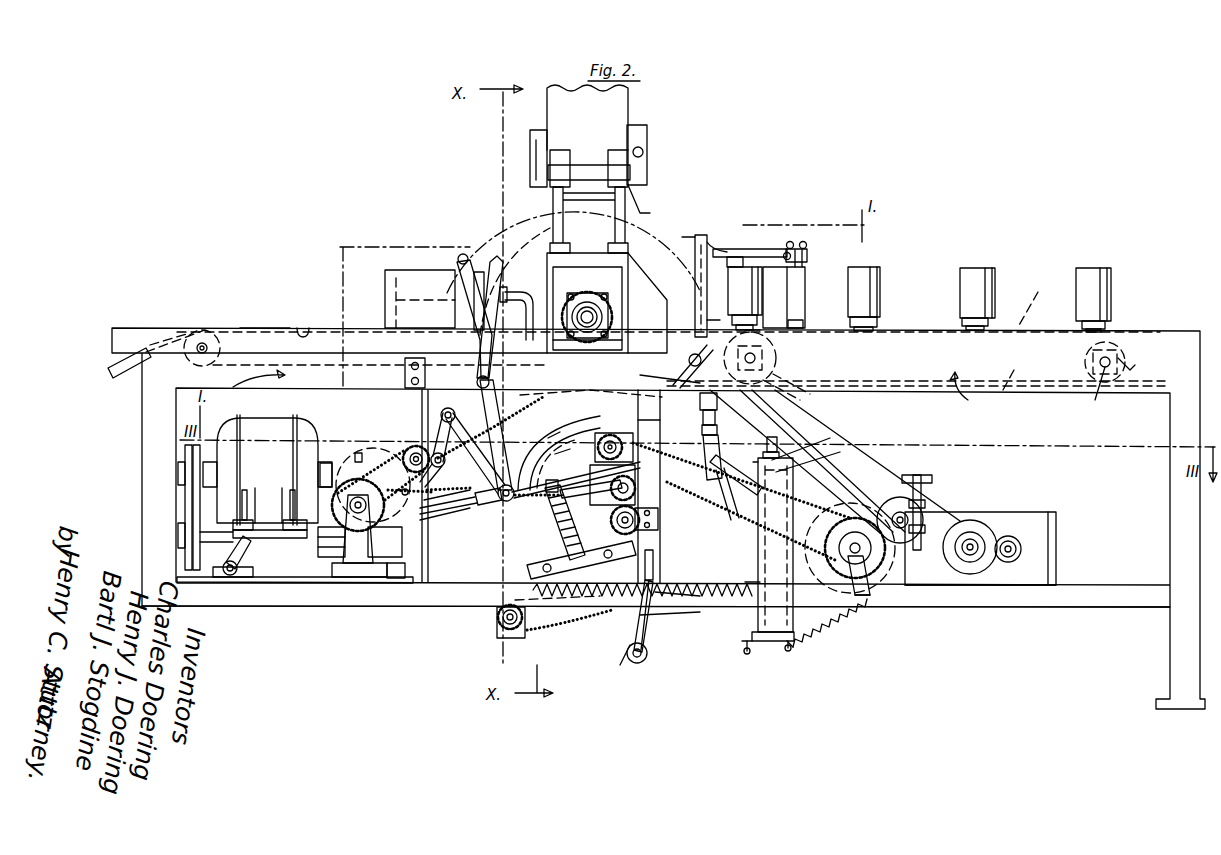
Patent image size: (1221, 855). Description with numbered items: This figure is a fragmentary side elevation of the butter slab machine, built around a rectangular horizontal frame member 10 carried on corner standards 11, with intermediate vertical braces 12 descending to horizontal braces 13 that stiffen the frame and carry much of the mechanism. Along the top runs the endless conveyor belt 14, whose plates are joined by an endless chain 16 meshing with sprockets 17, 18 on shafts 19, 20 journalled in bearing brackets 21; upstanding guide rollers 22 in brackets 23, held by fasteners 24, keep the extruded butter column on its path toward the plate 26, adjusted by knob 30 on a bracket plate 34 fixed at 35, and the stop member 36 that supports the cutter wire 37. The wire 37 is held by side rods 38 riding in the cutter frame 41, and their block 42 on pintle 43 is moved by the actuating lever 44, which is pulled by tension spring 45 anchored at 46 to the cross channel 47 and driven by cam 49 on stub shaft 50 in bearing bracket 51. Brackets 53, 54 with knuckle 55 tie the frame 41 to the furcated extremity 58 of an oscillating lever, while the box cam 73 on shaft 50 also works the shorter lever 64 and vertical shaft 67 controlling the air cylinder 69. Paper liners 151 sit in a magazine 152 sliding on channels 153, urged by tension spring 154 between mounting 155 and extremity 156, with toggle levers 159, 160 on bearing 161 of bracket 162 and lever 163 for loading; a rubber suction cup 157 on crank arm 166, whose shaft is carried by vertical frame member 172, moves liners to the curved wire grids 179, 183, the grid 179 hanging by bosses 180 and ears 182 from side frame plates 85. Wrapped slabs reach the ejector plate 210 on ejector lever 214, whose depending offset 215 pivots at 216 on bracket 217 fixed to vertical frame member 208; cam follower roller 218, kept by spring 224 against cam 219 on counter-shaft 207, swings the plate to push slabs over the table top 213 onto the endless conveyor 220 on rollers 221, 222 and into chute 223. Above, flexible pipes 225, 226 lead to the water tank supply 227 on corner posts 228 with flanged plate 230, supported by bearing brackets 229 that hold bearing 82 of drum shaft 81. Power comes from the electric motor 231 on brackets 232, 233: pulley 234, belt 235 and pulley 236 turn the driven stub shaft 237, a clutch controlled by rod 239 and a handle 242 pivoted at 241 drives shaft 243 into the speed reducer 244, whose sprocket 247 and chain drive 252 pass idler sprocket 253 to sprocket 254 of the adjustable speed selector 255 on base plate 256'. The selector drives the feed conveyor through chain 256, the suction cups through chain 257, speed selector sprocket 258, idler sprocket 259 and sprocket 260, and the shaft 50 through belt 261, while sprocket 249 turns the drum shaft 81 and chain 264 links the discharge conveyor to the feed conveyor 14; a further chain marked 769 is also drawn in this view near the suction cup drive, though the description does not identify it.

The horizontal frame member 10 is at (609, 393).
The corner standards 11 is at (160, 408).
The intermediate vertical braces 12 is at (650, 429).
The horizontal braces 13 is at (385, 607).
The endless conveyor belt 14 is at (1033, 301).
The endless chain 16 is at (1014, 372).
The sprocket 17 is at (1135, 369).
The sprocket 18 is at (780, 349).
The shaft 19 is at (1101, 390).
The shaft 20 is at (1112, 345).
The bearing brackets 21 is at (764, 322).
The vertical guide rollers 22 is at (1110, 258).
The brackets 23 is at (760, 320).
The fasteners 24 is at (870, 318).
The horizontally extending plate 26 is at (748, 249).
The manual manipulating knob 30 is at (800, 243).
The upstanding bracket plate 34 is at (790, 283).
The fixing point 35 is at (800, 322).
The angularly offset stop member 36 is at (712, 245).
The slab cutter wire 37 is at (686, 238).
The cutter side rods 38 is at (651, 303).
The cutter frame 41 is at (703, 234).
The block 42 is at (697, 400).
The pintle 43 is at (718, 320).
The actuating lever 44 is at (767, 445).
The tension spring 45 is at (830, 623).
The spring anchor 46 is at (797, 647).
The cross channel 47 is at (772, 635).
The actuating cam 49 is at (998, 595).
The stub shaft 50 is at (833, 590).
The bearing bracket 51 is at (858, 600).
The bracket 53 is at (724, 414).
The bracket 54 is at (745, 458).
The adjustable knuckle 55 is at (726, 449).
The furcated extremity 58 is at (748, 490).
The lever 64 is at (809, 454).
The vertical shaft 67 is at (801, 440).
The air cylinder 69 is at (741, 581).
The box cam 73 is at (925, 588).
The drum shaft 81 is at (603, 314).
The bearing 82 is at (568, 300).
The side frame plates 85 is at (553, 453).
The paper liners 151 is at (560, 528).
The magazine 152 is at (581, 560).
The channels 153 is at (728, 521).
The tension spring 154 is at (642, 572).
The spring mounting 155 is at (557, 610).
The spring extremity 156 is at (748, 654).
The rubber suction cup 157 is at (546, 498).
The toggle lever 159 is at (698, 569).
The toggle lever 160 is at (678, 618).
The bearing 161 is at (630, 660).
The bracket 162 is at (633, 632).
The lever 163 is at (610, 661).
The crank arm 166 is at (611, 521).
The vertical frame member 172 is at (654, 560).
The curved wire grid 179 is at (547, 464).
The bosses 180 is at (550, 452).
The ears 182 is at (542, 435).
The curved wire grid 183 is at (598, 452).
The counter-shaft 207 is at (407, 447).
The vertical frame member 208 is at (426, 530).
The ejector plate 210 is at (497, 267).
The table top 213 is at (263, 328).
The ejector lever 214 is at (530, 320).
The depending offset 215 is at (498, 426).
The pivot 216 is at (500, 458).
The bracket 217 is at (430, 420).
The cam follower roller 218 is at (451, 450).
The cam 219 is at (402, 452).
The endless conveyor 220 is at (305, 330).
The roller 221 is at (385, 327).
The roller 222 is at (205, 328).
The chute 223 is at (137, 354).
The spring 224 is at (591, 400).
The flexible pipe 225 is at (647, 140).
The flexible pipe 226 is at (530, 136).
The water tank supply 227 is at (612, 106).
The corner posts 228 is at (550, 212).
The bearing brackets 229 is at (610, 280).
The flanged plate 230 is at (588, 168).
The electric motor 231 is at (280, 448).
The bracket 232 is at (290, 580).
The bracket 233 is at (233, 570).
The pulley 234 is at (178, 473).
The belt 235 is at (193, 505).
The pulley 236 is at (178, 537).
The driven stub shaft 237 is at (280, 583).
The rod 239 is at (494, 507).
The pivot 241 is at (447, 373).
The manual gripping handle 242 is at (460, 262).
The shaft 243 is at (407, 440).
The speed reducer 244 is at (342, 473).
The sprocket 247 is at (430, 522).
The sprocket 249 is at (630, 322).
The chain drive 252 is at (500, 515).
The idler sprocket 253 is at (497, 620).
The sprocket 254 is at (998, 528).
The adjustable speed selector 255 is at (925, 495).
The chain 256 is at (835, 461).
The base plate 256' is at (1029, 583).
The chain 257 is at (832, 508).
The speed selector sprocket 258 is at (868, 598).
The idler sprocket 259 is at (606, 484).
The sprocket 260 is at (613, 490).
The belt 261 is at (895, 497).
The chain 264 is at (668, 368).
The chain 769 is at (655, 478).